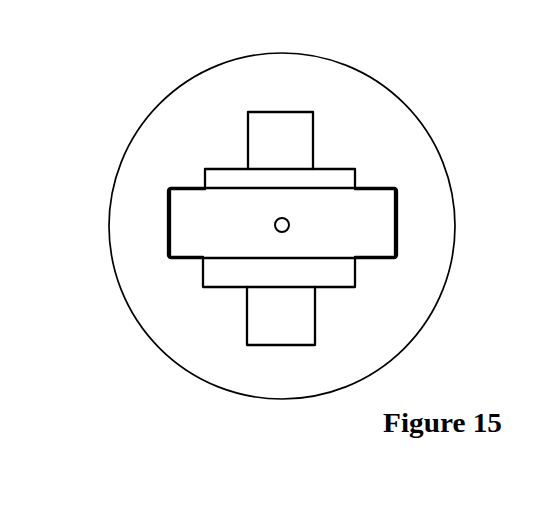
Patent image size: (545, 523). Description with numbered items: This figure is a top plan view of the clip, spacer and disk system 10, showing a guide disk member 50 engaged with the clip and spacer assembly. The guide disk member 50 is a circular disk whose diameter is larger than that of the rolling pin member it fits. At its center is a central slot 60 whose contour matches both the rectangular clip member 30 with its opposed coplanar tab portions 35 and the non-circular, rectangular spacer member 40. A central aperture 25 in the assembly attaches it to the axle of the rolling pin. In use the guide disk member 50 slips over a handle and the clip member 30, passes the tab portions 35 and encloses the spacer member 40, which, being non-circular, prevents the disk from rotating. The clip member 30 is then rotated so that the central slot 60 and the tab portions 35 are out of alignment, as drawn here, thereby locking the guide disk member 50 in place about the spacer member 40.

The clip, spacer and disk system 10 is at (273, 205).
The central aperture 25 is at (272, 217).
The clip member 30 is at (330, 233).
The tab portions 35 is at (177, 207).
The spacer member 40 is at (333, 183).
The guide disk member 50 is at (270, 68).
The central slot 60 is at (295, 133).